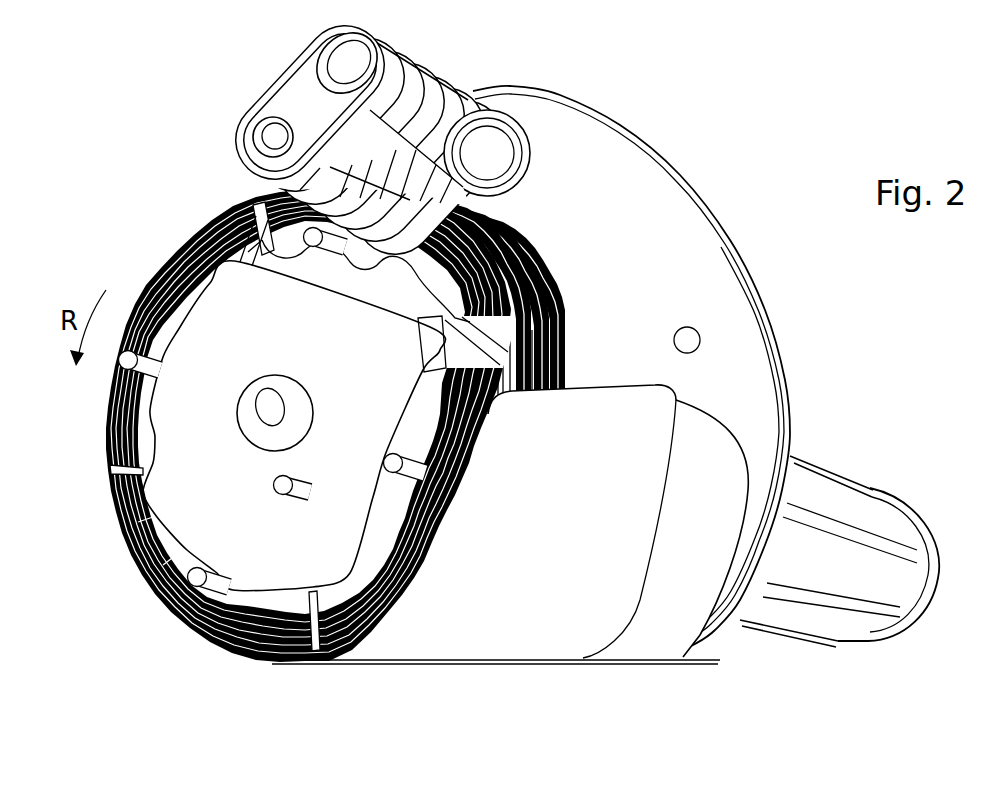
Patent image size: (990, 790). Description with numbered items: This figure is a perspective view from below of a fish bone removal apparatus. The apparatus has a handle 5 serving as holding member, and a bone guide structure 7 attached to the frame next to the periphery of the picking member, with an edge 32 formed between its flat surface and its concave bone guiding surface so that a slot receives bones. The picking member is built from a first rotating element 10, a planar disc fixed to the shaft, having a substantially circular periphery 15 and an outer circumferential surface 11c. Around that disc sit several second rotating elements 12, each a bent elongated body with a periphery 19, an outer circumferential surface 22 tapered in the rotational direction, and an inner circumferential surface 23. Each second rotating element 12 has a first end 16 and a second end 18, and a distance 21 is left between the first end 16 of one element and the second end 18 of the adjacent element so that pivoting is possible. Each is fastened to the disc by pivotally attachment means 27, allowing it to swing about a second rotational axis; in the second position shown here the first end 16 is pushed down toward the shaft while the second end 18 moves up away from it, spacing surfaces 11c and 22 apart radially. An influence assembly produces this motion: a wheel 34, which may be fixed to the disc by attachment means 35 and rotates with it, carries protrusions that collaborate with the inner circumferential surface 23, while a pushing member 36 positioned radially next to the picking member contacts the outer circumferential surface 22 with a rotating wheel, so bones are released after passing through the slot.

The handle 5 is at (848, 495).
The bone guide structure 7 is at (617, 410).
The first rotating element 10 is at (578, 385).
The outer circumferential surface 11c is at (547, 377).
The second rotating element 12 is at (592, 317).
The periphery 15 is at (527, 365).
The first end 16 is at (258, 238).
The second end 18 is at (522, 271).
The periphery 19 is at (537, 292).
The distance 21 is at (108, 476).
The outer circumferential surface 22 is at (545, 297).
The inner circumferential surface 23 is at (130, 558).
The pivotally attachment means 27 is at (225, 645).
The edge 32 is at (273, 663).
The wheel 34 is at (203, 240).
The attachment means 35 is at (272, 487).
The pushing member 36 is at (240, 110).